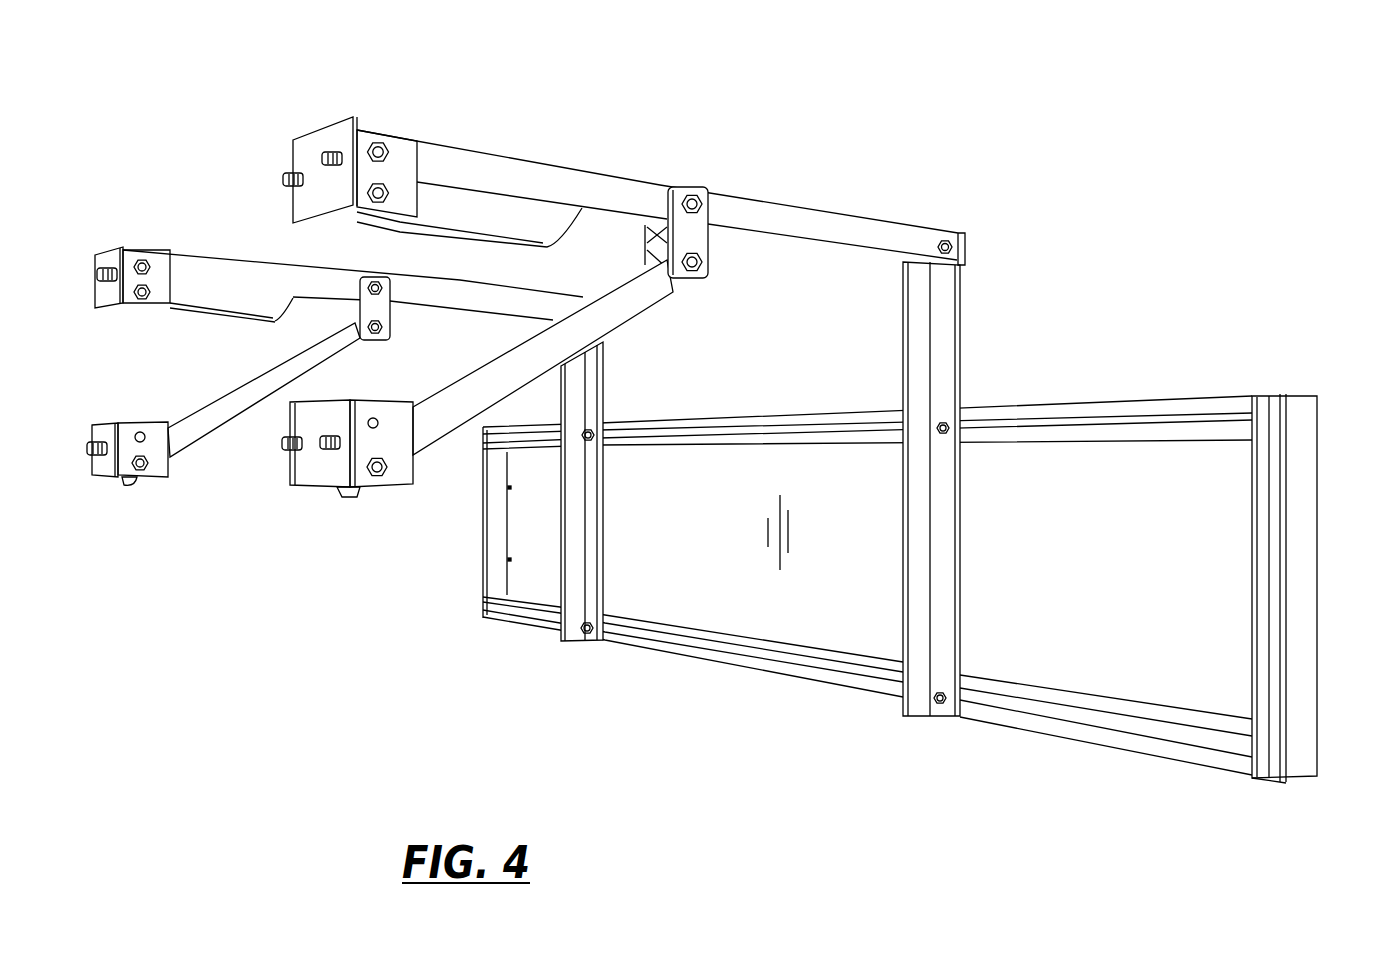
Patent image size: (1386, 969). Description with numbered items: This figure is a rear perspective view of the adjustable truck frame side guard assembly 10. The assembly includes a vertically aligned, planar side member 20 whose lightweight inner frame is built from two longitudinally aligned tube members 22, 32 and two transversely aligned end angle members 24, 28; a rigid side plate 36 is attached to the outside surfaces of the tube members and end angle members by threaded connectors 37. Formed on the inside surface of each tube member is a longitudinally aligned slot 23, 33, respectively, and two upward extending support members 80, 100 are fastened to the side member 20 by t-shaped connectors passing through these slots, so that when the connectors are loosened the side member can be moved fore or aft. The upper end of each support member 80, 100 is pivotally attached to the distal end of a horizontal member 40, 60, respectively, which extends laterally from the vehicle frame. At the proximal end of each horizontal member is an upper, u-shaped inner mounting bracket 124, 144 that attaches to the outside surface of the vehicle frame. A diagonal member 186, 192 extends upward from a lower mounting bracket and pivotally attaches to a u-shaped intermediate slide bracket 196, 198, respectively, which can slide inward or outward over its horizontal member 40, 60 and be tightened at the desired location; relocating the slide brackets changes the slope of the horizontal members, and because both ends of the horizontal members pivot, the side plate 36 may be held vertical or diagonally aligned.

The side guard assembly 10 is at (1106, 124).
The side member 20 is at (694, 688).
The tube member 22 is at (1079, 406).
The slot 23 is at (1075, 421).
The end angle member 24 is at (1318, 533).
The end angle member 28 is at (483, 546).
The tube member 32 is at (540, 625).
The slot 33 is at (1072, 722).
The side plate 36 is at (823, 566).
The threaded connectors 37 is at (317, 157).
The horizontal member 40 is at (675, 187).
The horizontal member 60 is at (278, 267).
The support member 80 is at (907, 348).
The support member 100 is at (597, 413).
The upper mounting bracket 124 is at (327, 125).
The upper mounting bracket 144 is at (128, 240).
The diagonal member 186 is at (457, 380).
The diagonal member 192 is at (243, 397).
The slide bracket 196 is at (710, 278).
The slide bracket 198 is at (378, 287).